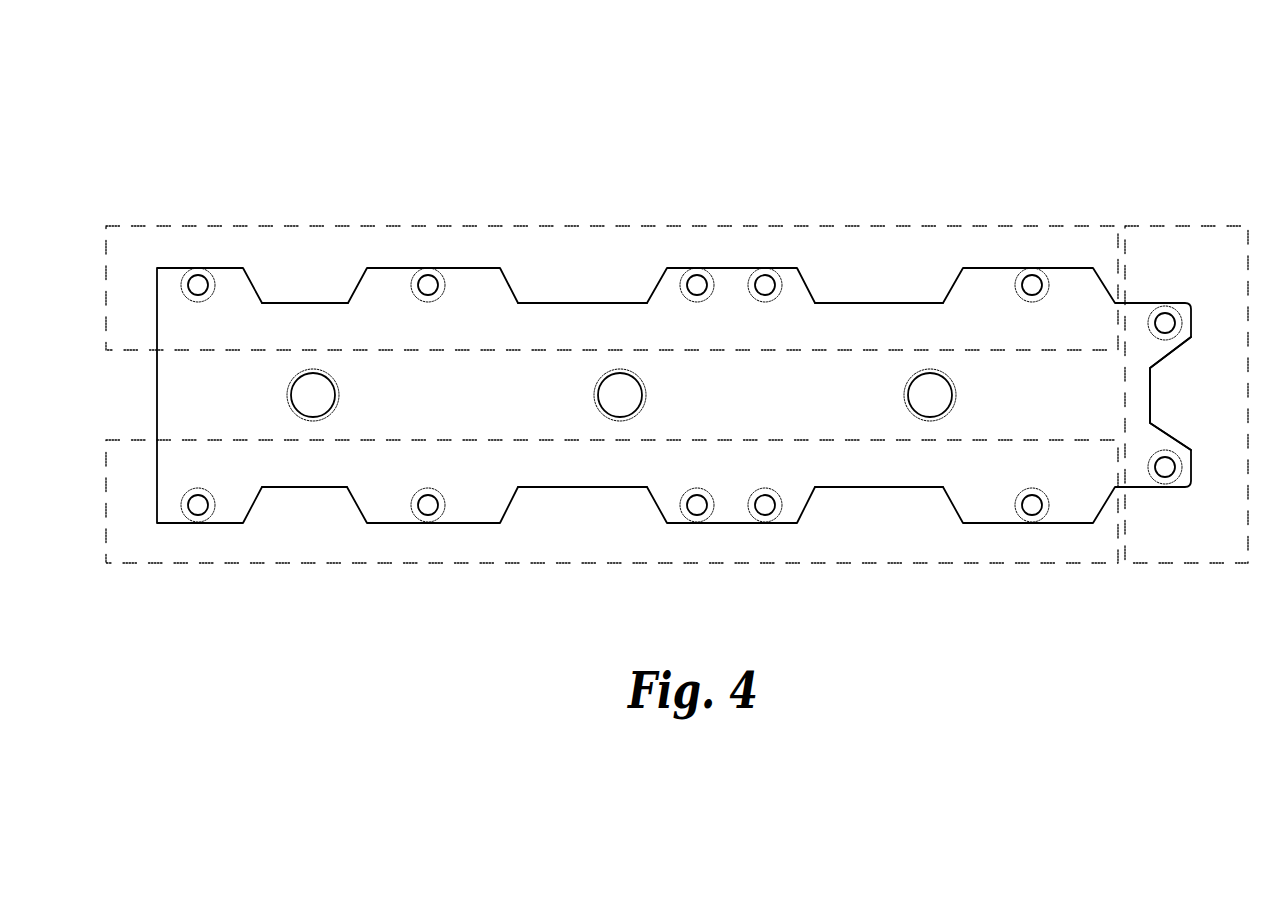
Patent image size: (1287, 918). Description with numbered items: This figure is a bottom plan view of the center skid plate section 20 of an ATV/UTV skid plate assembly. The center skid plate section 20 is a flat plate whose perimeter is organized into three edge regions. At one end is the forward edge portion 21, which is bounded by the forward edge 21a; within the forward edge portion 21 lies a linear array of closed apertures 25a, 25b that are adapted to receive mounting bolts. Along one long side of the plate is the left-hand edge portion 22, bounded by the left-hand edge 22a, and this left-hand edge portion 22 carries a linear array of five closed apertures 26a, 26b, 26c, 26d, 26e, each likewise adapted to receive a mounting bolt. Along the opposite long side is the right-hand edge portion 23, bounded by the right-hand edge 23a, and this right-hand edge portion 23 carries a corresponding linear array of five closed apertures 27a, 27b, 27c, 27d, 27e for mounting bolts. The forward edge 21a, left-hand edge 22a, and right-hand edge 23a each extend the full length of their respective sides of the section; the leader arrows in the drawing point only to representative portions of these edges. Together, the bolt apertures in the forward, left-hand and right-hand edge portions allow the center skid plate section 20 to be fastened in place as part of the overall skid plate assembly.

The center skid plate section 20 is at (245, 152).
The forward edge portion 21 is at (1166, 227).
The forward edge 21a is at (1170, 352).
The left-hand edge portion 22 is at (144, 226).
The left-hand edge 22a is at (747, 265).
The right-hand edge portion 23 is at (146, 563).
The right-hand edge 23a is at (567, 489).
The closed aperture 25a is at (1165, 323).
The closed aperture 25b is at (1165, 467).
The closed aperture 26a is at (1032, 295).
The closed aperture 26b is at (765, 295).
The closed aperture 26c is at (697, 295).
The closed aperture 26d is at (428, 295).
The closed aperture 26e is at (198, 295).
The closed aperture 27a is at (1032, 495).
The closed aperture 27b is at (765, 495).
The closed aperture 27c is at (697, 495).
The closed aperture 27d is at (428, 495).
The closed aperture 27e is at (198, 495).